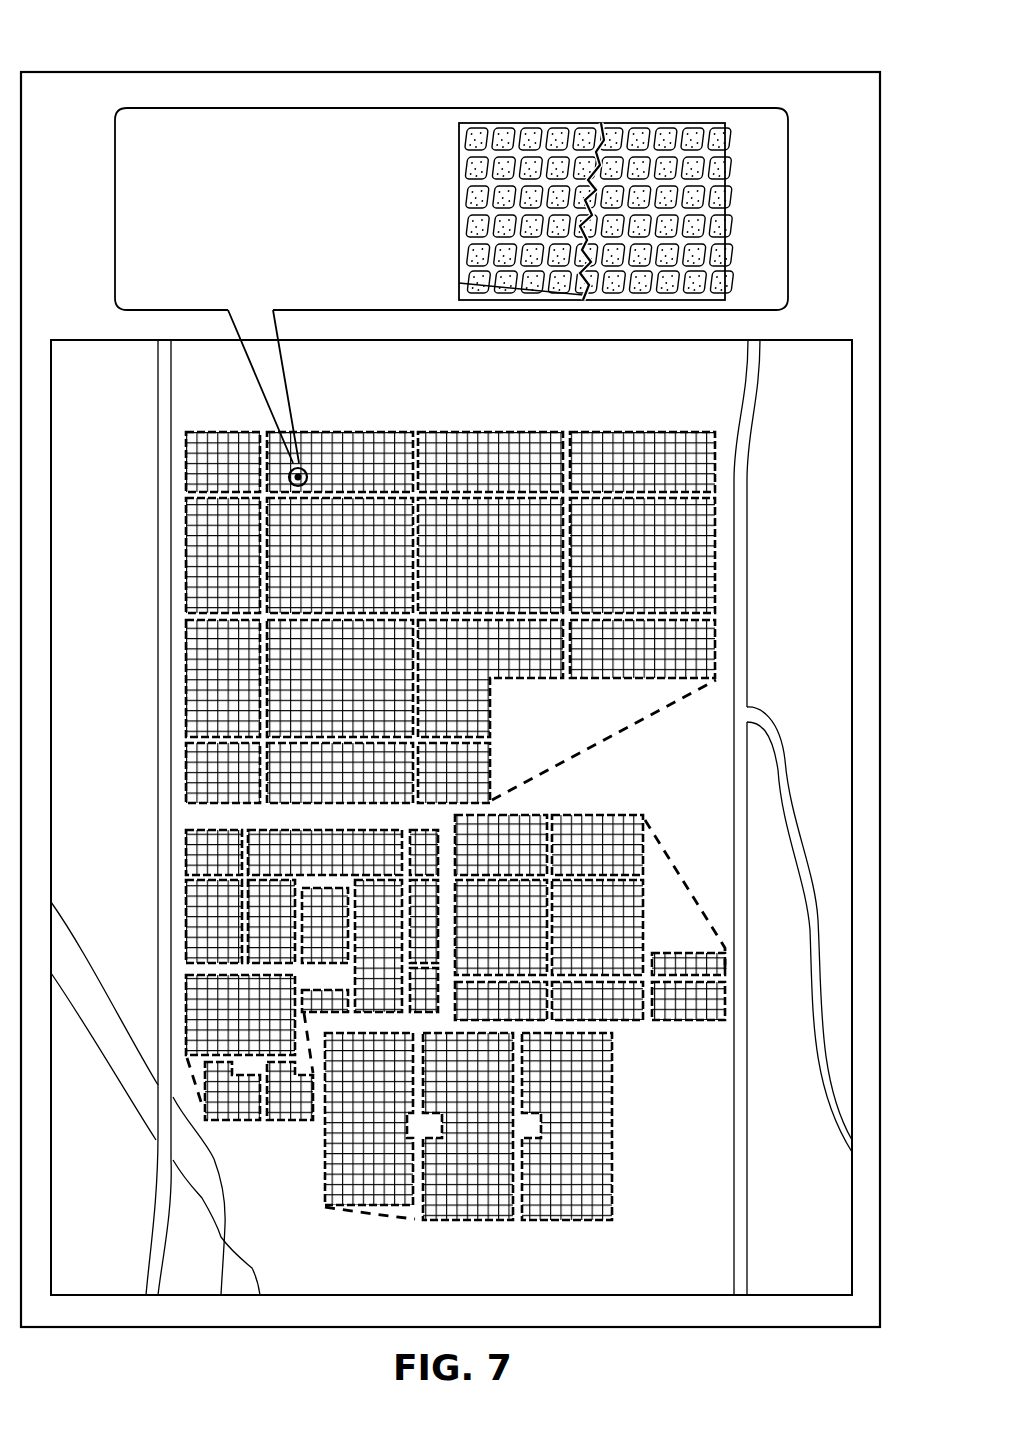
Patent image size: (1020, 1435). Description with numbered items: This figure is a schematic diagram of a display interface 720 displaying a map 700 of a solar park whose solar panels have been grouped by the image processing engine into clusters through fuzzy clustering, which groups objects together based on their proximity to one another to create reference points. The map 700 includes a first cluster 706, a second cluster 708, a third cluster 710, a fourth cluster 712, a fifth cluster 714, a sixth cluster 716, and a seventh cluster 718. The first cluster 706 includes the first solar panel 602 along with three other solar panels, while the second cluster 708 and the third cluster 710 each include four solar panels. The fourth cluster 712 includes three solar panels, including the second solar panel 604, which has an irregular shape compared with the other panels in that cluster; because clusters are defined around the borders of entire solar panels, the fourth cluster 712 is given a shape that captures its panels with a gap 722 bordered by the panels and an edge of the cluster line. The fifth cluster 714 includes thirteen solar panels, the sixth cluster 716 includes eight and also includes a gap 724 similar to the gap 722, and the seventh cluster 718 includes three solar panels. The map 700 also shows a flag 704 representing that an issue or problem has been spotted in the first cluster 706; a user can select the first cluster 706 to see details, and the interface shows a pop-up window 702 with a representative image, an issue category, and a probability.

The map 700 is at (820, 340).
The pop-up window 702 is at (665, 108).
The flag 704 is at (316, 446).
The first solar panel 602 is at (353, 458).
The second solar panel 604 is at (520, 655).
The first cluster 706 is at (186, 505).
The second cluster 708 is at (632, 432).
The third cluster 710 is at (186, 695).
The fourth cluster 712 is at (715, 652).
The fifth cluster 714 is at (188, 886).
The sixth cluster 716 is at (660, 1022).
The seventh cluster 718 is at (614, 1160).
The display interface 720 is at (74, 72).
The gap 722 is at (578, 724).
The gap 724 is at (668, 905).